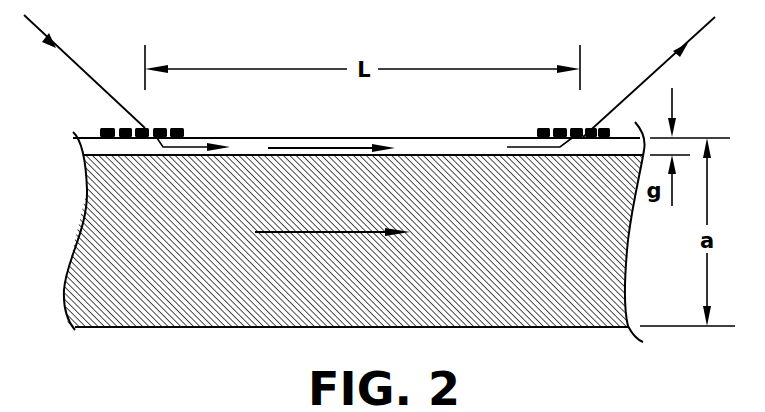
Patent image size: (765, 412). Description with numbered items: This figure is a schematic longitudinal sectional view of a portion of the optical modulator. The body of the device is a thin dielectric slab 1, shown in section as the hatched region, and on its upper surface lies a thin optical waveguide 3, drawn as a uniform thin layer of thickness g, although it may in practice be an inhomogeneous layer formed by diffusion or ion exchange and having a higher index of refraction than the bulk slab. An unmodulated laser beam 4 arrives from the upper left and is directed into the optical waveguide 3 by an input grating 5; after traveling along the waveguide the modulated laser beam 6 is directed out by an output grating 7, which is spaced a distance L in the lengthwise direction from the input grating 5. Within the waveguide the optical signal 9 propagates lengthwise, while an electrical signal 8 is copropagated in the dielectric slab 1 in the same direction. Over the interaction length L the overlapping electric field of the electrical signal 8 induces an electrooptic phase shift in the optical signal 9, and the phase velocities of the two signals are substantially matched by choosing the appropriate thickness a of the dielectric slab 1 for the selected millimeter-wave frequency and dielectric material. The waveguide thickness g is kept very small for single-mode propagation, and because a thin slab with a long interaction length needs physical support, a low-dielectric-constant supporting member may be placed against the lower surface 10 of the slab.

The dielectric slab 1 is at (510, 253).
The optical waveguide 3 is at (450, 148).
The unmodulated laser beam 4 is at (70, 55).
The input grating 5 is at (173, 128).
The modulated laser beam 6 is at (702, 28).
The output grating 7 is at (553, 128).
The electrical signal 8 is at (322, 232).
The optical signal 9 is at (335, 147).
The surface 10 is at (488, 328).